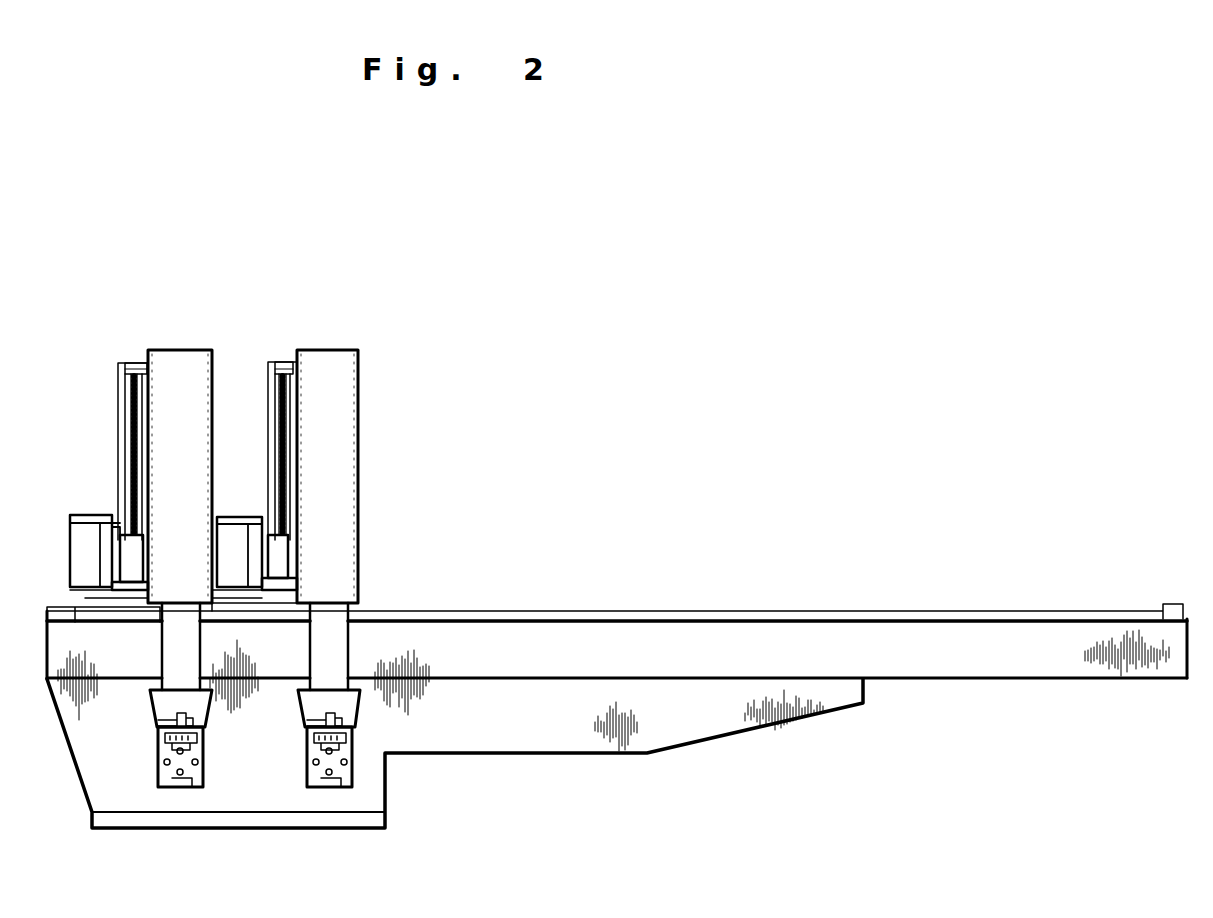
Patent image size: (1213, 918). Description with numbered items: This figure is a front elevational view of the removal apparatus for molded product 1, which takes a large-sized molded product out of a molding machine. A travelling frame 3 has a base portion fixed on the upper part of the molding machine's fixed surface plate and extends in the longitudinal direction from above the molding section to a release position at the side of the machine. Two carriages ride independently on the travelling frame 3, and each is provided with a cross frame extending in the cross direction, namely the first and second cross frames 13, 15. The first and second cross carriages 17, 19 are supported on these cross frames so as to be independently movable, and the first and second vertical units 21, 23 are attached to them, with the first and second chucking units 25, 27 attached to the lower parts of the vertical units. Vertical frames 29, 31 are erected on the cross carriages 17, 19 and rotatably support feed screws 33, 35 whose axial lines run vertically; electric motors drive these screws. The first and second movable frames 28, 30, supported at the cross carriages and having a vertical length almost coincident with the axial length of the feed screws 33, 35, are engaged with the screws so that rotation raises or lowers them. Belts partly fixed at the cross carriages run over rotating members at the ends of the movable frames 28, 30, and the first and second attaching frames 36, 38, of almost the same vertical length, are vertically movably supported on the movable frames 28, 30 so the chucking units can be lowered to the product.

The removal apparatus for molded product 1 is at (500, 360).
The travelling frame 3 is at (580, 722).
The first cross frame 13 is at (83, 543).
The second cross frame 15 is at (233, 540).
The first cross carriage 17 is at (128, 583).
The second cross carriage 19 is at (252, 573).
The first vertical unit 21 is at (178, 329).
The second vertical unit 23 is at (332, 329).
The first chucking unit 25 is at (193, 813).
The second chucking unit 27 is at (341, 813).
The first movable frame 28 is at (167, 465).
The vertical frame 29 is at (132, 363).
The second movable frame 30 is at (338, 453).
The vertical frame 31 is at (282, 362).
The feed screw 33 is at (137, 433).
The feed screw 35 is at (282, 420).
The first attaching frame 36 is at (173, 648).
The second attaching frame 38 is at (342, 646).